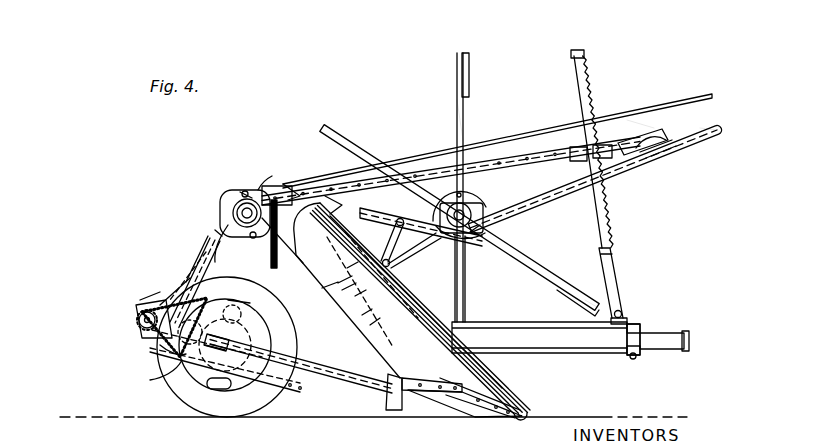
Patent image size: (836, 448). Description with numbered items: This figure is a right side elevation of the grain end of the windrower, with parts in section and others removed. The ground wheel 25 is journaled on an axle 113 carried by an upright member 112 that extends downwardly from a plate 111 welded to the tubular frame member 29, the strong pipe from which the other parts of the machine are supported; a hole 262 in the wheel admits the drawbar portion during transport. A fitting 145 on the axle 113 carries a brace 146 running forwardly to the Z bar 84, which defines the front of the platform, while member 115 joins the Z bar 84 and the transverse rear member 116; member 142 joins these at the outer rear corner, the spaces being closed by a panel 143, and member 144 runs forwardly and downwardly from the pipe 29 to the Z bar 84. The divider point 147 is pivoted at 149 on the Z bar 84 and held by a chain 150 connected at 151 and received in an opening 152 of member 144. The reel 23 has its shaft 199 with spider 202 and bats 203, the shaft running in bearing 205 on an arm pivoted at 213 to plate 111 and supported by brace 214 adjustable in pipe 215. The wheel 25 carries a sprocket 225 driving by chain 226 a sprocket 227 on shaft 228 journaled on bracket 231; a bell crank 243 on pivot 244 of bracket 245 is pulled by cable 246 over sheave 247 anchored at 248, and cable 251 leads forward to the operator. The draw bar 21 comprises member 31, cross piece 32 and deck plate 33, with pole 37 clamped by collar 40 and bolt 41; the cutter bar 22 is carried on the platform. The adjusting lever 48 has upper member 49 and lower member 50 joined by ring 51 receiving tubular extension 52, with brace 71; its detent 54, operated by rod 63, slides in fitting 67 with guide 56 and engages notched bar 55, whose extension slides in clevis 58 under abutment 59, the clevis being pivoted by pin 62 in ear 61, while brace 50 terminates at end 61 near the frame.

The draw bar 21 is at (545, 316).
The cutter bar 22 is at (466, 418).
The reel 23 is at (448, 93).
The ground wheel 25 is at (258, 409).
The tubular frame member 29 is at (226, 206).
The forwardly extending member 31 is at (539, 337).
The cross piece 32 is at (642, 325).
The plate 33 is at (500, 320).
The pole 37 is at (662, 345).
The collar 40 is at (626, 340).
The bolt 41 is at (634, 358).
The adjusting lever 48 is at (648, 130).
The upper member 49 is at (502, 160).
The lower member 50 is at (512, 216).
The ring-like member 51 is at (704, 138).
The tubular extension 52 is at (666, 160).
The detent 54 is at (612, 118).
The notched bar 55 is at (606, 202).
The guide 56 is at (590, 98).
The clevis 58 is at (614, 252).
The abutment 59 is at (620, 308).
The ear 61 is at (606, 311).
The pin 62 is at (624, 312).
The rod 63 is at (640, 134).
The fitting 67 is at (578, 148).
The brace 71 is at (526, 204).
The Z bar 84 is at (400, 410).
The plate 111 is at (214, 228).
The upright member 112 is at (210, 242).
The axle 113 is at (230, 336).
The member 115 is at (292, 384).
The member 116 is at (150, 360).
The member 142 is at (194, 262).
The panel 143 is at (186, 284).
The member 144 is at (286, 188).
The fitting 145 is at (212, 354).
The brace 146 is at (320, 374).
The divider point 147 is at (508, 384).
The pivot 149 is at (420, 372).
The chain 150 is at (318, 166).
The connection 151 is at (304, 266).
The opening 152 is at (256, 238).
The reel shaft 199 is at (440, 280).
The spider 202 is at (458, 112).
The bats 203 is at (469, 70).
The bearing 205 is at (466, 206).
The pivot 213 is at (242, 190).
The brace 214 is at (318, 202).
The pipe 215 is at (408, 283).
The sprocket 225 is at (172, 384).
The chain 226 is at (160, 346).
The sprocket 227 is at (140, 326).
The shaft 228 is at (140, 316).
The bracket 231 is at (148, 296).
The bell crank 243 is at (140, 286).
The pivot 244 is at (230, 282).
The bracket 245 is at (260, 298).
The cable 246 is at (232, 212).
The sheave 247 is at (250, 190).
The anchorage 248 is at (262, 188).
The cable 251 is at (433, 172).
The hole 262 is at (216, 389).